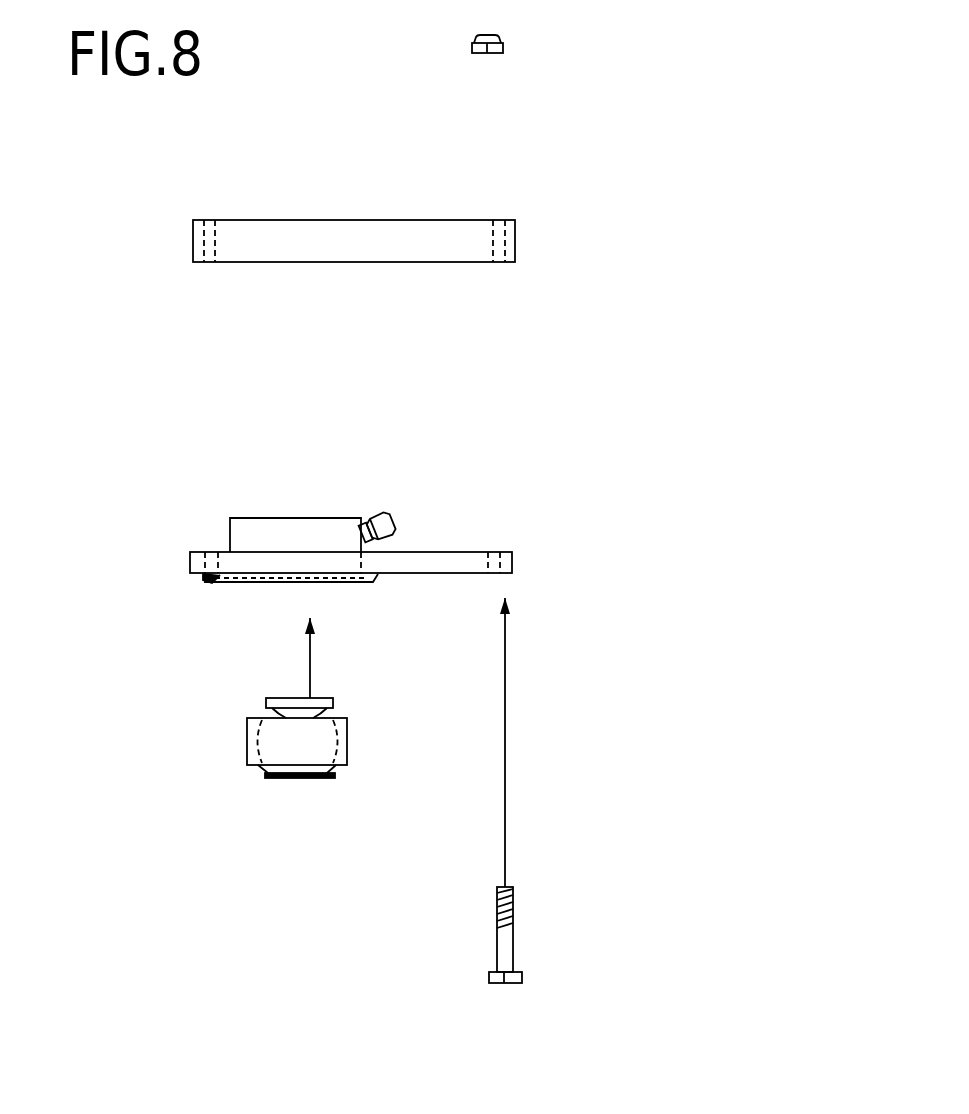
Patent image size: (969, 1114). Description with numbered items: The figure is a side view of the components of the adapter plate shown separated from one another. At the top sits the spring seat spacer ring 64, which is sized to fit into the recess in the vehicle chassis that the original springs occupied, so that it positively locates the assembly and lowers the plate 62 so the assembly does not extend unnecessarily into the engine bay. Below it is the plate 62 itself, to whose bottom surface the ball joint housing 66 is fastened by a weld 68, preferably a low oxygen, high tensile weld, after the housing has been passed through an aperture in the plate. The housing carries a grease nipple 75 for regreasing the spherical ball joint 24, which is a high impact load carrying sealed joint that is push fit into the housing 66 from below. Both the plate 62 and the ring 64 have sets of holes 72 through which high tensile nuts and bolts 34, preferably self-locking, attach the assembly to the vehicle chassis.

The spherical ball joint 24 is at (248, 762).
The high tensile nuts and bolts 34 is at (508, 42).
The plate 62 is at (514, 563).
The spring seat spacer ring 64 is at (430, 218).
The ball joint housing 66 is at (249, 583).
The weld 68 is at (212, 574).
The holes 72 is at (208, 228).
The grease nipple 75 is at (396, 517).